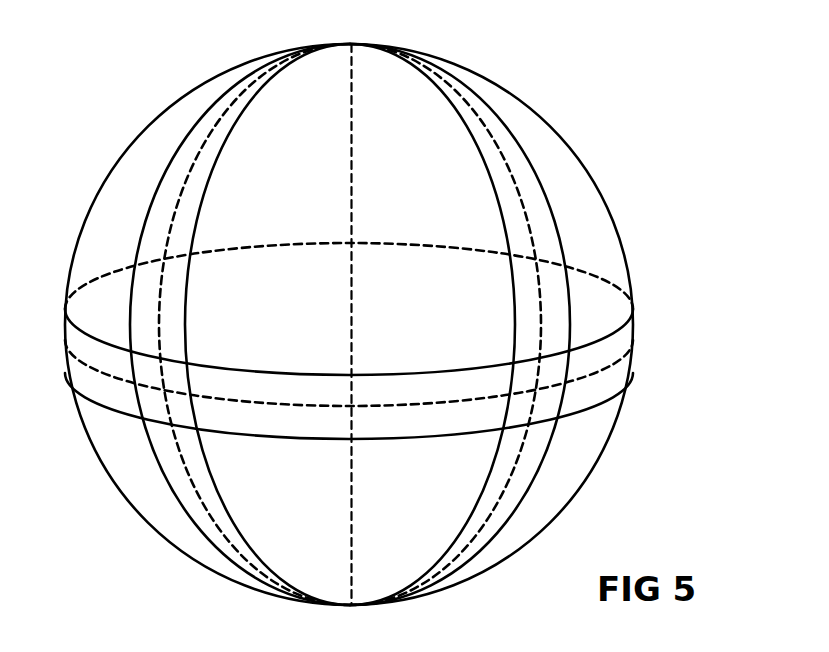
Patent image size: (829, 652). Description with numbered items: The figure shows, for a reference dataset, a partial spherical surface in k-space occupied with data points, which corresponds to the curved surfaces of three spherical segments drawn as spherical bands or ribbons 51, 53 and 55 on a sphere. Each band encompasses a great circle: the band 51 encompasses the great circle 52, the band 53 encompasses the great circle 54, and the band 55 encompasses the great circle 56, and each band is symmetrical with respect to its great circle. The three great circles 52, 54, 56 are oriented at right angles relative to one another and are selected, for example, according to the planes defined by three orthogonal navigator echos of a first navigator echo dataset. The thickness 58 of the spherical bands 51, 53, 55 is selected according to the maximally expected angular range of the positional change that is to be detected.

The spherical band 51 is at (602, 368).
The great circle 52 is at (620, 342).
The spherical band 53 is at (510, 152).
The great circle 54 is at (470, 107).
The spherical band 55 is at (225, 97).
The great circle 56 is at (202, 145).
The thickness 58 is at (134, 318).